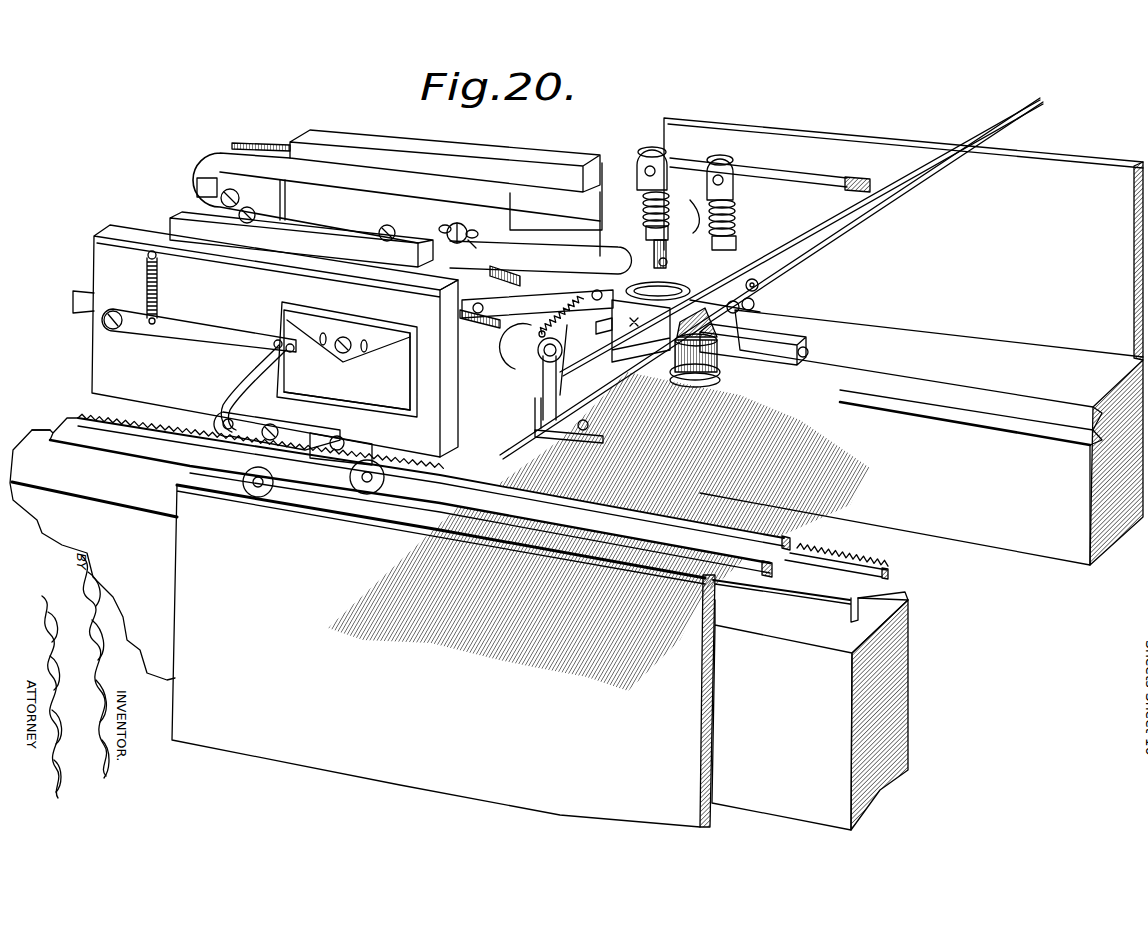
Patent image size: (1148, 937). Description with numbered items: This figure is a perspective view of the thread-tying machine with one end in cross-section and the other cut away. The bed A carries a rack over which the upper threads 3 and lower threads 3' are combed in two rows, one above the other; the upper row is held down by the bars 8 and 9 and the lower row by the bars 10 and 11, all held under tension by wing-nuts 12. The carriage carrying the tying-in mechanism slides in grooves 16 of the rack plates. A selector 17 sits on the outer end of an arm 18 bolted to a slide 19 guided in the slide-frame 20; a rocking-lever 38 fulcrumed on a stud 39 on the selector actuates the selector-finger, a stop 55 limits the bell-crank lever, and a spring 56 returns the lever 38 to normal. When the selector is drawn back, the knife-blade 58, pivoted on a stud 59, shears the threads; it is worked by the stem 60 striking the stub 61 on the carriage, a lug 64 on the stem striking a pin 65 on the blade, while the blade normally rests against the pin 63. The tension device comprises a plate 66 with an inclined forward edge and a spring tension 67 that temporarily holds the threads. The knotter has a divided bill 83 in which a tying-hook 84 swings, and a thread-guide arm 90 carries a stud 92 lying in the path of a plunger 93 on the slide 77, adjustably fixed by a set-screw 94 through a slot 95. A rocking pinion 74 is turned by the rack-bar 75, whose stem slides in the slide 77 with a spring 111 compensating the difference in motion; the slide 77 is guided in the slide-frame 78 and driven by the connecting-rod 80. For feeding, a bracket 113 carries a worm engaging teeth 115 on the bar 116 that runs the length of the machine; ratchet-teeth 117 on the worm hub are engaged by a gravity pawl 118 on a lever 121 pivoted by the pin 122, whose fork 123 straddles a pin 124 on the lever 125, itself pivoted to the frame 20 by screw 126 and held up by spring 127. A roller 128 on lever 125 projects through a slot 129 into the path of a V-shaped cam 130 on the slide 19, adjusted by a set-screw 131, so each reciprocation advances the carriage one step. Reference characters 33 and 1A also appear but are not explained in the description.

The slide-frame 20 is at (130, 233).
The connecting-rod 80 is at (204, 182).
The slide-frame 78 is at (353, 143).
The slide 77 is at (460, 193).
The set-screw 94 is at (458, 224).
The plunger 93 is at (533, 243).
The slot 95 is at (474, 243).
The rocking-lever 38 is at (548, 298).
The spring 111 is at (490, 273).
The wing-nuts 12 is at (643, 228).
The divided bill 83 is at (688, 208).
The bar 9 is at (777, 172).
The bar 11 is at (871, 186).
The threads 3' is at (771, 278).
The threads 3 is at (801, 238).
The tying-hook 84 is at (659, 262).
The spring tension 67 is at (666, 289).
The thread-guide arm 90 is at (758, 287).
The stud 92 is at (754, 310).
The plate 66 is at (805, 346).
The rack-bar 75 is at (735, 346).
The stop 55 is at (652, 321).
The block 33 is at (650, 352).
The rocking pinion 74 is at (720, 380).
The stud 39 is at (535, 325).
The spring 56 is at (578, 305).
The knife-blade 58 is at (608, 329).
The pin 63 is at (547, 352).
The stud 59 is at (548, 360).
The lug 64 is at (562, 392).
The pin 65 is at (543, 398).
The stem 60 is at (536, 410).
The stub 61 is at (537, 436).
The selector 17 is at (515, 350).
The arm 18 is at (482, 326).
The slide 19 is at (460, 390).
The spring 127 is at (147, 268).
The roller 128 is at (287, 318).
The set-screw 131 is at (344, 336).
The pin 124 is at (270, 340).
The lever 125 is at (199, 330).
The screw 126 is at (115, 330).
The fork 123 is at (282, 348).
The V-shaped cam 130 is at (390, 340).
The slot 129 is at (416, 370).
The gravity pawl 118 is at (293, 388).
The lever 121 is at (233, 415).
The ratchet-teeth 117 is at (278, 425).
The teeth 115 is at (260, 440).
The bracket 113 is at (317, 444).
The pin 122 is at (250, 470).
The bar 116 is at (100, 462).
The grooves 16 is at (945, 410).
The bar 8 is at (804, 546).
The bar 10 is at (768, 584).
The bed end 1A is at (83, 400).
The bed of the machine A is at (1032, 153).